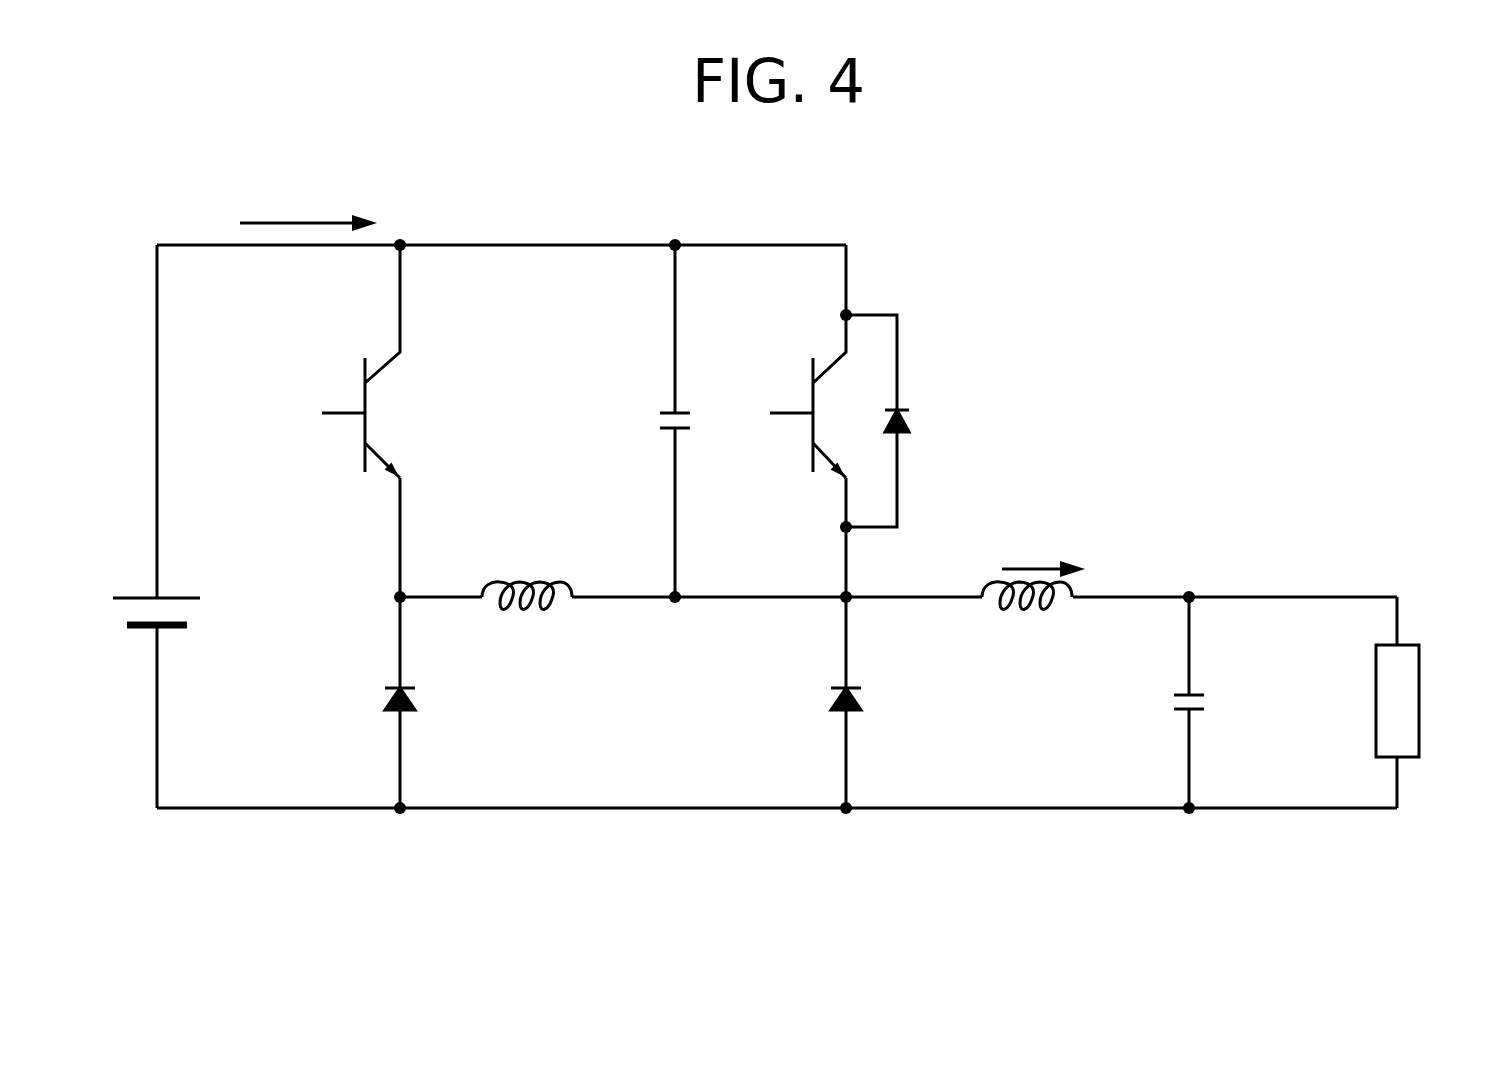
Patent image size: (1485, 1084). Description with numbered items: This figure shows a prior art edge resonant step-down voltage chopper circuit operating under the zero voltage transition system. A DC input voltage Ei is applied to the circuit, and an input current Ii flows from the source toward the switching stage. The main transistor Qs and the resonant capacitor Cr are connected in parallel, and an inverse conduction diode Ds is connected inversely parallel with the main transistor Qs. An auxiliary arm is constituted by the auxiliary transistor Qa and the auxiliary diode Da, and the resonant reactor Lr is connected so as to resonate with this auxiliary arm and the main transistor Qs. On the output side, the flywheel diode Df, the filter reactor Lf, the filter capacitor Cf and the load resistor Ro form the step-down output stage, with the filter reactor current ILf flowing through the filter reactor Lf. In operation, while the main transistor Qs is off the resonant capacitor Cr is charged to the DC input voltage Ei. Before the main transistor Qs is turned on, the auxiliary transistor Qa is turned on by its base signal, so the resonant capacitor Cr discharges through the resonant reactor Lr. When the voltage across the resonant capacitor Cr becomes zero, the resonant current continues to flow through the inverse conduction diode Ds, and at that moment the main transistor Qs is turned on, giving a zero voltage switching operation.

The DC input voltage Ei is at (155, 593).
The input current Ii is at (295, 213).
The auxiliary transistor Qa is at (372, 337).
The resonant capacitor Cr is at (658, 421).
The main transistor Qs is at (816, 346).
The inverse conduction diode Ds is at (898, 421).
The resonant reactor Lr is at (527, 618).
The auxiliary diode Da is at (375, 701).
The flywheel diode Df is at (825, 701).
The filter reactor Lf is at (1027, 618).
The filter reactor current ILf is at (1101, 568).
The filter capacitor Cf is at (1208, 699).
The load resistor Ro is at (1420, 701).